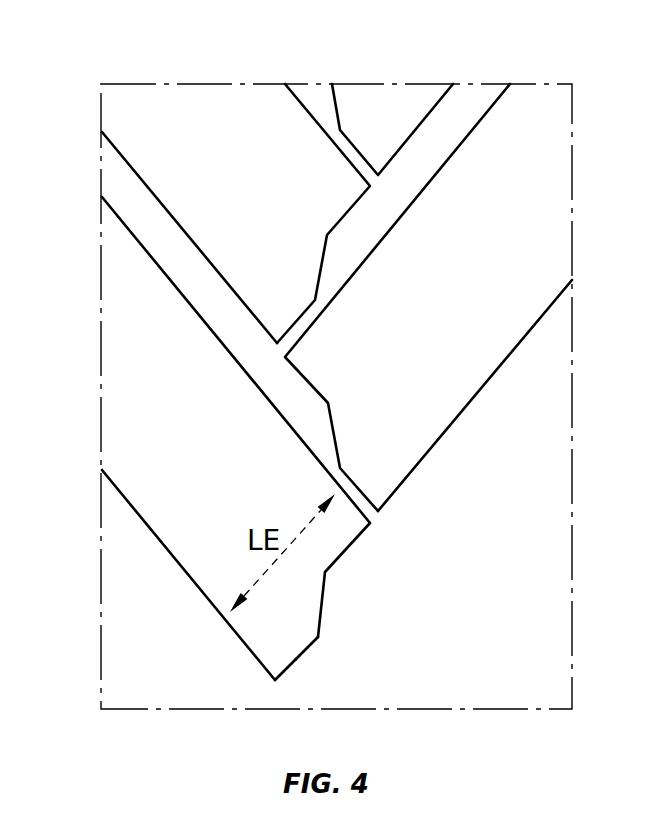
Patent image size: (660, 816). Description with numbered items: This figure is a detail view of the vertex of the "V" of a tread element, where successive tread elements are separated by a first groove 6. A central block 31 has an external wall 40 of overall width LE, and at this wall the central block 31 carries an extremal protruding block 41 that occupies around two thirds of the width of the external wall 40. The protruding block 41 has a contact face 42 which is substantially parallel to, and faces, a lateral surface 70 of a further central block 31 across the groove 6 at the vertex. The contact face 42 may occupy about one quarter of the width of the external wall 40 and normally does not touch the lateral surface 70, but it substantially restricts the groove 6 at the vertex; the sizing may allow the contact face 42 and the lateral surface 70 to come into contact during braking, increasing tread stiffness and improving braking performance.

The first groove 6 is at (86, 148).
The lateral surface 70 is at (199, 295).
The central block 31 is at (545, 367).
The external wall 40 is at (388, 565).
The extremal protruding block 41 is at (250, 708).
The contact face 42 is at (338, 672).